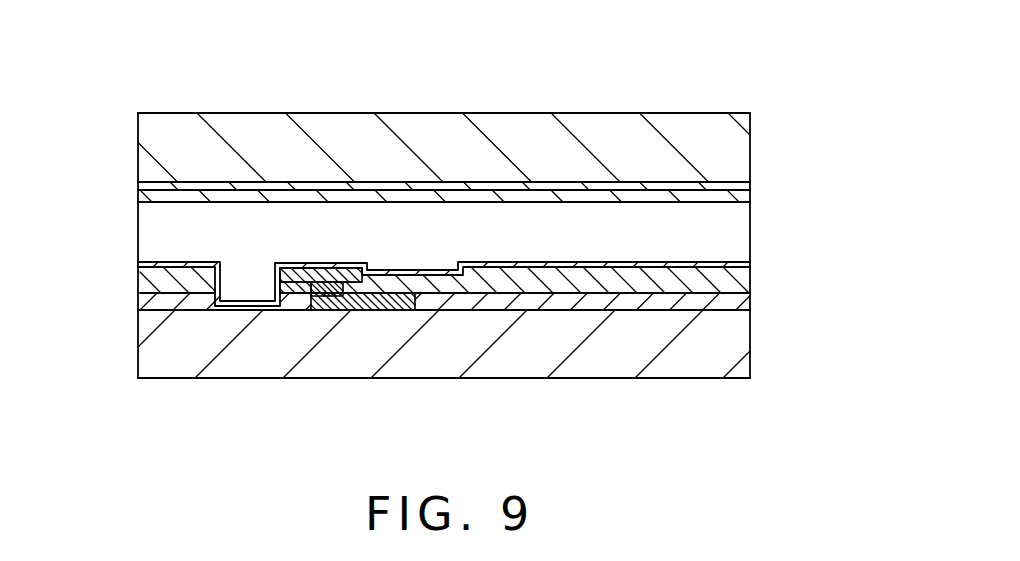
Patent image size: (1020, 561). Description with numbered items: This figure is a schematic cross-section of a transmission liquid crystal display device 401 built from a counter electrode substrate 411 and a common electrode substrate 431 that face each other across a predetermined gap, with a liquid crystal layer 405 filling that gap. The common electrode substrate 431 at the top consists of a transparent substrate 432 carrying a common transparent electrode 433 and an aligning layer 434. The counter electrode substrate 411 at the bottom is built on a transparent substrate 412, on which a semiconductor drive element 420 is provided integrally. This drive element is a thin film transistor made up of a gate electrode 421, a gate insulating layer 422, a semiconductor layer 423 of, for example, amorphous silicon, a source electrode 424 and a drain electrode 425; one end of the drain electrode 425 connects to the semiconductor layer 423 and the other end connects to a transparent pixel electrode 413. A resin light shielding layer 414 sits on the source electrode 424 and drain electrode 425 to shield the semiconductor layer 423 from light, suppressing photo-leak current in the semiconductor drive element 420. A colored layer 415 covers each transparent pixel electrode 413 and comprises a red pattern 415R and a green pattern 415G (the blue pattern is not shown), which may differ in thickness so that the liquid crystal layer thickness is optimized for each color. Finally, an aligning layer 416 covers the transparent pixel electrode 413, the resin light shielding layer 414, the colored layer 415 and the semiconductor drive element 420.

The liquid crystal display device 401 is at (614, 88).
The common electrode substrate 431 is at (772, 106).
The transparent substrate 432 is at (737, 150).
The common transparent electrode 433 is at (740, 185).
The aligning layer 434 is at (745, 196).
The aligning layer 416 is at (733, 262).
The colored layer 415 is at (764, 279).
The red pattern 415R is at (147, 282).
The green pattern 415G is at (610, 278).
The liquid crystal layer 405 is at (574, 246).
The drain electrode 425 is at (390, 283).
The semiconductor layer 423 is at (322, 283).
The source electrode 424 is at (285, 283).
The resin light shielding layer 414 is at (297, 270).
The gate electrode 421 is at (325, 300).
The gate insulating layer 422 is at (400, 304).
The semiconductor drive element 420 is at (360, 322).
The transparent pixel electrode 413 is at (750, 300).
The counter electrode substrate 411 is at (740, 393).
The transparent substrate 412 is at (749, 338).